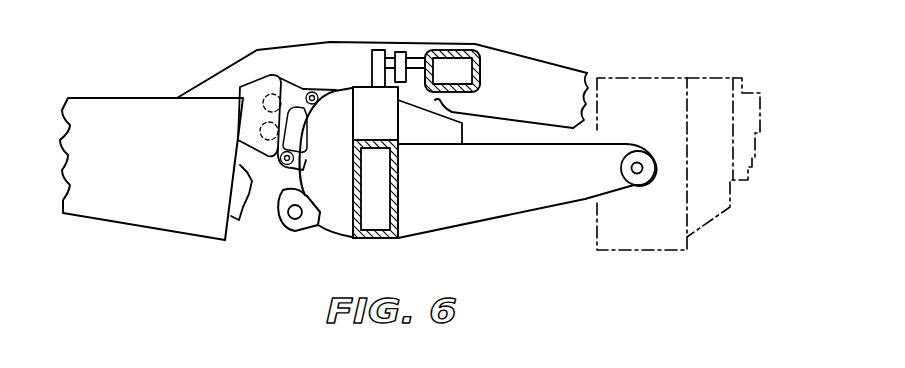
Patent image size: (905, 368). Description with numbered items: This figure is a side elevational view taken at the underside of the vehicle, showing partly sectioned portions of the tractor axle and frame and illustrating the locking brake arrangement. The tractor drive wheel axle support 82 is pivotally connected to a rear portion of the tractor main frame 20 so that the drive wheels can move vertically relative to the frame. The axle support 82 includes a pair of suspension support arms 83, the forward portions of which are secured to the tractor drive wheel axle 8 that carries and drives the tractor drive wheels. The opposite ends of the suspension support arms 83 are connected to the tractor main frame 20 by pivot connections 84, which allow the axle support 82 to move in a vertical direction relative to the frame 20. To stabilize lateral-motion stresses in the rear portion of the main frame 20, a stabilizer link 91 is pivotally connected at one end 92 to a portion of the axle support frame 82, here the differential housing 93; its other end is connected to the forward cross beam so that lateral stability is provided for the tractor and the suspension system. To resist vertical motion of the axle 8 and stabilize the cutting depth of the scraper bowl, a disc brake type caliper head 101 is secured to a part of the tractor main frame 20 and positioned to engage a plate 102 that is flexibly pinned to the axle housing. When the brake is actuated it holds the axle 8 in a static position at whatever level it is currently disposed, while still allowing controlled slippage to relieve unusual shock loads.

The tractor drive wheel axle 8 is at (367, 238).
The tractor main frame 20 is at (147, 228).
The tractor drive wheel axle support 82 is at (527, 204).
The suspension support arms 83 is at (495, 219).
The pivot connections 84 is at (640, 172).
The stabilizer link 91 is at (398, 50).
The one end of stabilizer link 92 is at (378, 30).
The differential housing 93 is at (283, 192).
The disc brake type caliper head 101 is at (257, 97).
The plate 102 is at (297, 82).